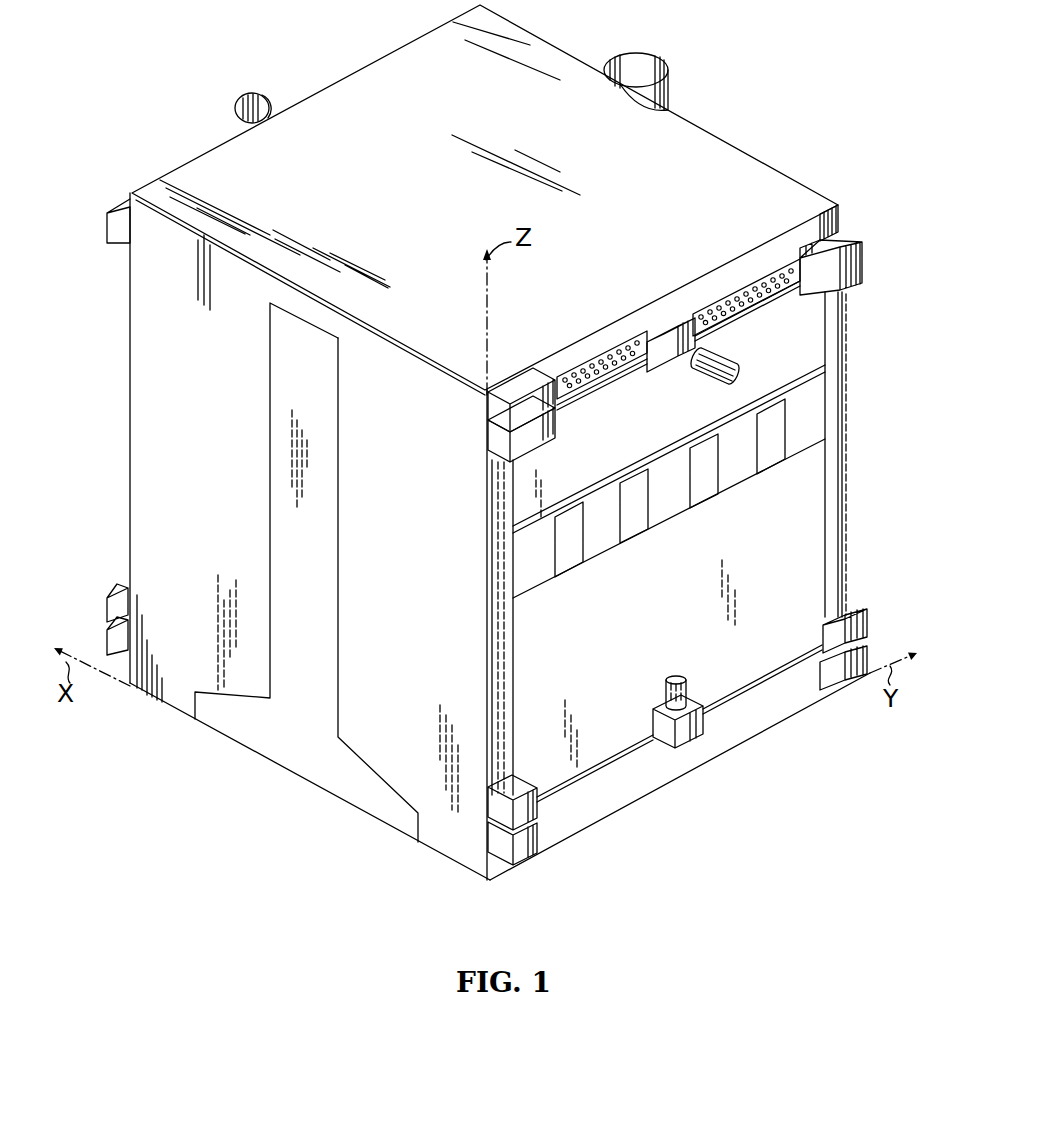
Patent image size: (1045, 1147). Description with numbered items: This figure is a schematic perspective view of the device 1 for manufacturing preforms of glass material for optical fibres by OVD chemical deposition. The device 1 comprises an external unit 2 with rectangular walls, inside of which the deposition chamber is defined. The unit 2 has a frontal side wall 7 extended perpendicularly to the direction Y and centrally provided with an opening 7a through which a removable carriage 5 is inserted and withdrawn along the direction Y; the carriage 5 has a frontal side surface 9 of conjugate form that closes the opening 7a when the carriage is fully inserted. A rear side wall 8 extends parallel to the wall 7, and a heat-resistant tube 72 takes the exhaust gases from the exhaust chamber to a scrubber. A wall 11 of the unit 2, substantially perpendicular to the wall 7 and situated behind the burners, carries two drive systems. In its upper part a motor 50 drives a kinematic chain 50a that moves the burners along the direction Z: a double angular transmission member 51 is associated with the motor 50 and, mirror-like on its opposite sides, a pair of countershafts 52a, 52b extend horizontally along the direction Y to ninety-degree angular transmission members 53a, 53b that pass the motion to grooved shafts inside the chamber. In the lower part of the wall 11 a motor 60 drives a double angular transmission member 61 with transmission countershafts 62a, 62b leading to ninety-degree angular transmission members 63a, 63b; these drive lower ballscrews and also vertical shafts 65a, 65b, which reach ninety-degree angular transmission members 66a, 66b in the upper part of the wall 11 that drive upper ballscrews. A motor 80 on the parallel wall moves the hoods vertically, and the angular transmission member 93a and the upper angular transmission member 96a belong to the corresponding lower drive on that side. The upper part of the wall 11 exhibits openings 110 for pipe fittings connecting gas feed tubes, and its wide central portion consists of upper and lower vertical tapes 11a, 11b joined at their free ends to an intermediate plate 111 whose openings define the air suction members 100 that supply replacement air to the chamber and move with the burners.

The device 1 is at (287, 823).
The external unit 2 is at (612, 820).
The carriage 5 is at (294, 512).
The frontal side wall 7 is at (421, 567).
The opening 7a is at (252, 759).
The rear side wall 8 is at (739, 134).
The frontal side surface 9 is at (306, 575).
The wall 11 is at (702, 543).
The upper vertical tape 11a is at (616, 457).
The lower vertical tape 11b is at (690, 635).
The motor 50 is at (710, 378).
The kinematic chain 50a is at (764, 310).
The double angular transmission member 51 is at (668, 336).
The countershaft 52a is at (578, 380).
The countershaft 52b is at (726, 316).
The 90° angular transmission member 53a is at (528, 400).
The 90° angular transmission member 53b is at (812, 256).
The motor 60 is at (690, 690).
The double angular transmission member 61 is at (693, 743).
The transmission countershaft 62a is at (641, 748).
The transmission countershaft 62b is at (766, 683).
The 90° angular transmission member 63a is at (543, 816).
The 90° angular transmission member 63b is at (870, 636).
The vertical shaft 65a is at (517, 707).
The vertical shaft 65b is at (845, 470).
The 90° angular transmission member 66a is at (493, 443).
The 90° angular transmission member 66b is at (836, 262).
The heat-resistant tube 72 is at (670, 80).
The motor 80 is at (256, 96).
The 90° angular transmission member 93a is at (115, 640).
The 90° angular transmission member 96a is at (114, 212).
The air suction members 100 is at (778, 452).
The openings 110 is at (593, 352).
The intermediate plate 111 is at (690, 497).